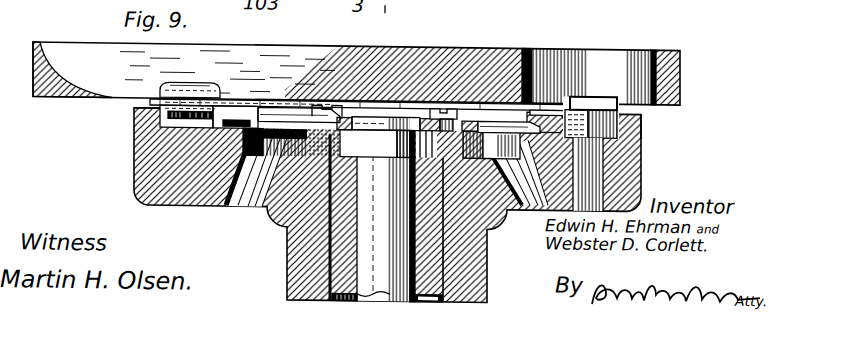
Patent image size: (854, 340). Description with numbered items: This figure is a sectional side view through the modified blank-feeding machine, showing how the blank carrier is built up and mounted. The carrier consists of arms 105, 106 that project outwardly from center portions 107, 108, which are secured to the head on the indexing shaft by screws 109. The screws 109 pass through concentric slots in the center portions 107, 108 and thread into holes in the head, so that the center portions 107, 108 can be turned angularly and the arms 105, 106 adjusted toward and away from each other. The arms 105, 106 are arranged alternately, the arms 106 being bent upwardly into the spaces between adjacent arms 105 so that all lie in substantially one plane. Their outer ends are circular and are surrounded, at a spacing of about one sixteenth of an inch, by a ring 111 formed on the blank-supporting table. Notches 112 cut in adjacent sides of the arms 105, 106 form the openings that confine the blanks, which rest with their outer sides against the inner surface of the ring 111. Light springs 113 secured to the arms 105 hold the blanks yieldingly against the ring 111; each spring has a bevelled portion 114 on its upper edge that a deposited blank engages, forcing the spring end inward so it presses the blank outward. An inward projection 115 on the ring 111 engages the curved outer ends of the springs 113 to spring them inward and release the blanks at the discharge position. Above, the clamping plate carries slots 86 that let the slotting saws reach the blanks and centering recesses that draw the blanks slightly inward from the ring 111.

The slots 86 is at (92, 53).
The light springs 113 is at (236, 130).
The bevelled portion 114 is at (227, 107).
The notches 112 is at (163, 133).
The center portion 108 is at (381, 143).
The arms 106 is at (262, 106).
The screws 109 is at (325, 108).
The center portion 107 is at (354, 110).
The arms 105 is at (518, 110).
The inward projection 115 is at (562, 121).
The ring 111 is at (642, 109).